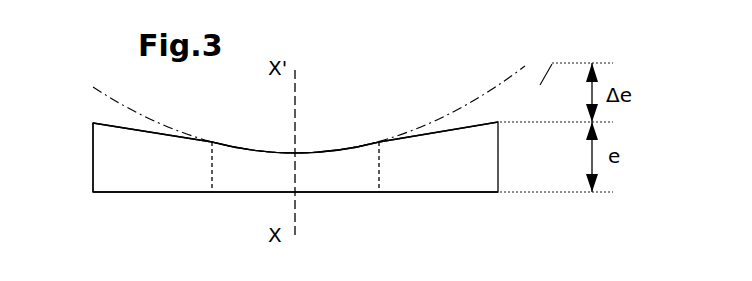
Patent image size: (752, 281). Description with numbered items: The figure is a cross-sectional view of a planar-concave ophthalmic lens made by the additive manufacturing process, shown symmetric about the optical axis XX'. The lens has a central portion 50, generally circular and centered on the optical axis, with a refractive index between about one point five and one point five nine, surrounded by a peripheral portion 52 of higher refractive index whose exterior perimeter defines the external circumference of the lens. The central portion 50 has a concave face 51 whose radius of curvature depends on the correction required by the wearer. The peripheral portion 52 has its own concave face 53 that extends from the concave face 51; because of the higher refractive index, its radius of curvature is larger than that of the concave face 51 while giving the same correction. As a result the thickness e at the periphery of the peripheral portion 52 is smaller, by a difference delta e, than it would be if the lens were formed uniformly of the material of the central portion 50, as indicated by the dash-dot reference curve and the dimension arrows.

The central portion 50 is at (328, 173).
The concave face of the central portion 51 is at (338, 148).
The peripheral portion 52 is at (467, 175).
The concave face of the peripheral portion 53 is at (108, 125).